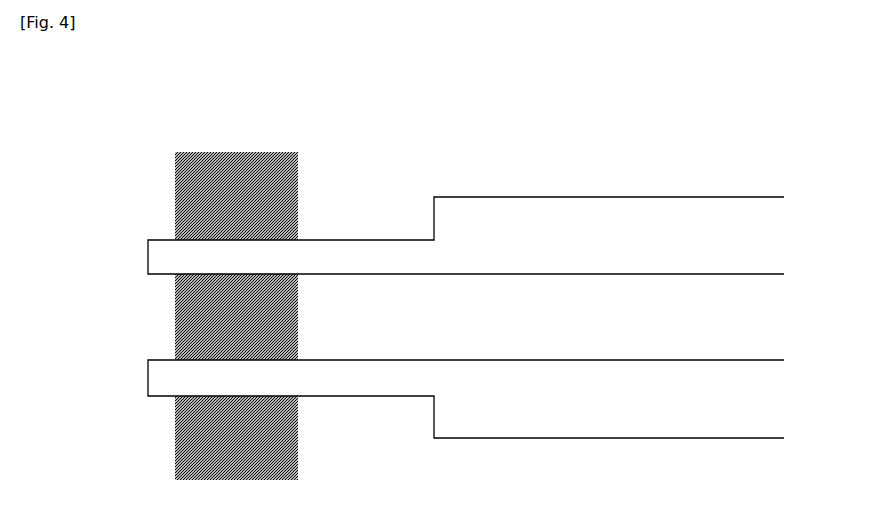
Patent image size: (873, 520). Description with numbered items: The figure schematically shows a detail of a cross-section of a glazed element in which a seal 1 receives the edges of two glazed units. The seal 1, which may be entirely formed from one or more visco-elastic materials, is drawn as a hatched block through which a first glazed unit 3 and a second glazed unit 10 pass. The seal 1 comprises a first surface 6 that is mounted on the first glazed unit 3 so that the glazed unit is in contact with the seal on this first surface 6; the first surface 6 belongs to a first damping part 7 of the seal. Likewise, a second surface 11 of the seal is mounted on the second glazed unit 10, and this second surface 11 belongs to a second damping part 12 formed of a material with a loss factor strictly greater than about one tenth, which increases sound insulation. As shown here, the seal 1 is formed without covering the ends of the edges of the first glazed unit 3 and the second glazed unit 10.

The seal 1 is at (227, 177).
The first glazed unit 3 is at (722, 218).
The first surface 6 is at (260, 238).
The first damping part 7 is at (227, 229).
The second glazed unit 10 is at (723, 372).
The second surface 11 is at (208, 360).
The second damping part 12 is at (218, 406).